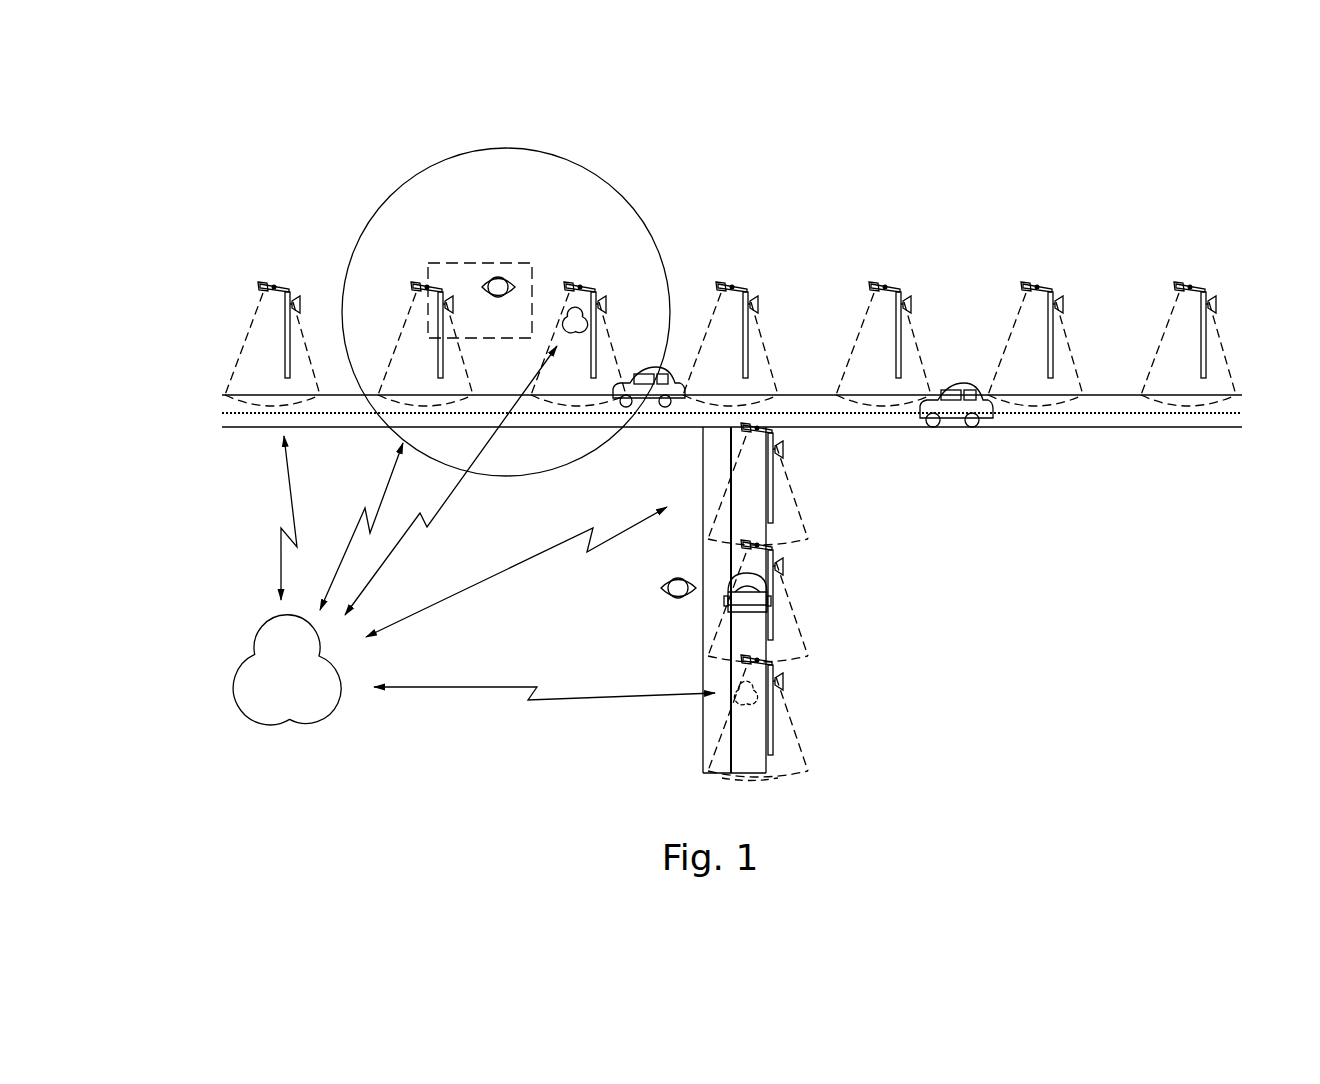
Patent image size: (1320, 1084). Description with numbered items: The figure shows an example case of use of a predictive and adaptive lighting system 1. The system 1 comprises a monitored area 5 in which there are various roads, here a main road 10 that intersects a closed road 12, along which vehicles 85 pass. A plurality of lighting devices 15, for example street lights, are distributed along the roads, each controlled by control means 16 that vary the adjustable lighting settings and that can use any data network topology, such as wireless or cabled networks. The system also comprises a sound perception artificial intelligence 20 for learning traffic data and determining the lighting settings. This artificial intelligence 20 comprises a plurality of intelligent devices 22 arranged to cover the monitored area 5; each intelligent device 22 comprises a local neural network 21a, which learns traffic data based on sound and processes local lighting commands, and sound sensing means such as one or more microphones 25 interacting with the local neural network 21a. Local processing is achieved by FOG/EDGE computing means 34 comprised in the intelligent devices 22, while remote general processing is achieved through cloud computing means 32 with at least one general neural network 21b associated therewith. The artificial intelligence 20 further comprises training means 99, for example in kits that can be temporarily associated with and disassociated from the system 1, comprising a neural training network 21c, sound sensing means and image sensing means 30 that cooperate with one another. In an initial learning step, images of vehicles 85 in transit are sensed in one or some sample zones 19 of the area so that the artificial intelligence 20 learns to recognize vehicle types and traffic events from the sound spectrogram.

The lighting system 1 is at (178, 277).
The monitored area 5 is at (1118, 269).
The main road 10 is at (1230, 424).
The closed road 12 is at (754, 743).
The lighting device 15 is at (262, 282).
The control means 16 is at (273, 284).
The sample zone 19 is at (366, 216).
The sound perception artificial intelligence 20 is at (222, 268).
The local neural network 21a is at (262, 296).
The general neural network 21b is at (250, 645).
The neural training network 21c is at (489, 273).
The intelligent device 22 is at (279, 218).
The microphone 25 is at (296, 297).
The image sensing means 30 is at (507, 274).
The cloud computing means 32 is at (232, 670).
The FOG/EDGE computing means 34 is at (560, 320).
The vehicle 85 is at (960, 427).
The training means 99 is at (500, 260).